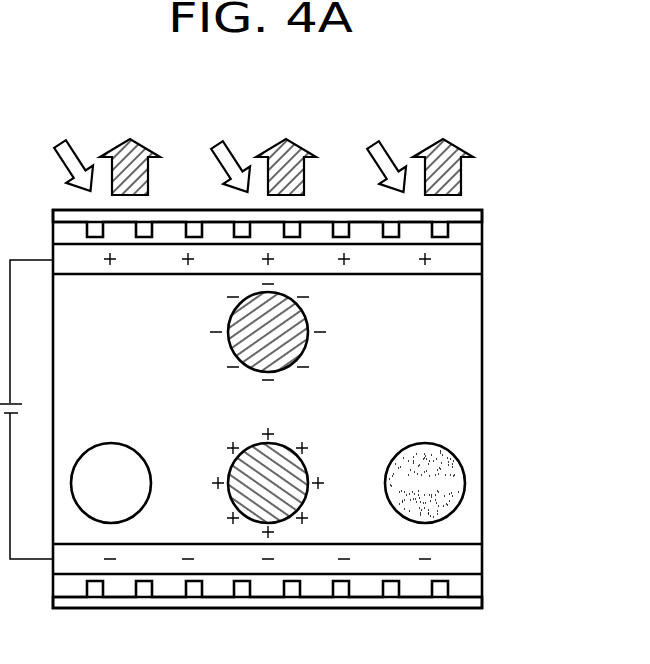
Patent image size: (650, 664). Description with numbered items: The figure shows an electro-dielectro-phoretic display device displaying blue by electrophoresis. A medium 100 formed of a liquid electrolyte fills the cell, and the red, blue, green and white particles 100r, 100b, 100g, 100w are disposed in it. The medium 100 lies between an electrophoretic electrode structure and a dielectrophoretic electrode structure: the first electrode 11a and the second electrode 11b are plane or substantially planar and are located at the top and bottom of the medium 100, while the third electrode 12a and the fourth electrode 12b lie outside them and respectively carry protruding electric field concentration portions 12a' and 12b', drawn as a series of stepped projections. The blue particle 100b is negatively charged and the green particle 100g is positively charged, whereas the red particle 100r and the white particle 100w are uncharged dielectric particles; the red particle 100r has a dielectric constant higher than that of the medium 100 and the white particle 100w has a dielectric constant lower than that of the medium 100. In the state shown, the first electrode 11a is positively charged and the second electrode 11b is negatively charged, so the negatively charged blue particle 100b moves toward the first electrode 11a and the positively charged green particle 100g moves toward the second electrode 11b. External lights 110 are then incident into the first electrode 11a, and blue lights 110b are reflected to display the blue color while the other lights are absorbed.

The external lights 110 is at (66, 147).
The blue lights 110b is at (129, 146).
The third electrode 12a is at (305, 207).
The electric field concentration portion 12a' is at (308, 233).
The first electrode 11a is at (478, 260).
The medium 100 is at (478, 408).
The blue particle 100b is at (200, 313).
The white particle 100w is at (105, 428).
The green particle 100g is at (218, 428).
The red particle 100r is at (423, 428).
The second electrode 11b is at (478, 556).
The electric field concentration portion 12b' is at (308, 584).
The fourth electrode 12b is at (305, 611).